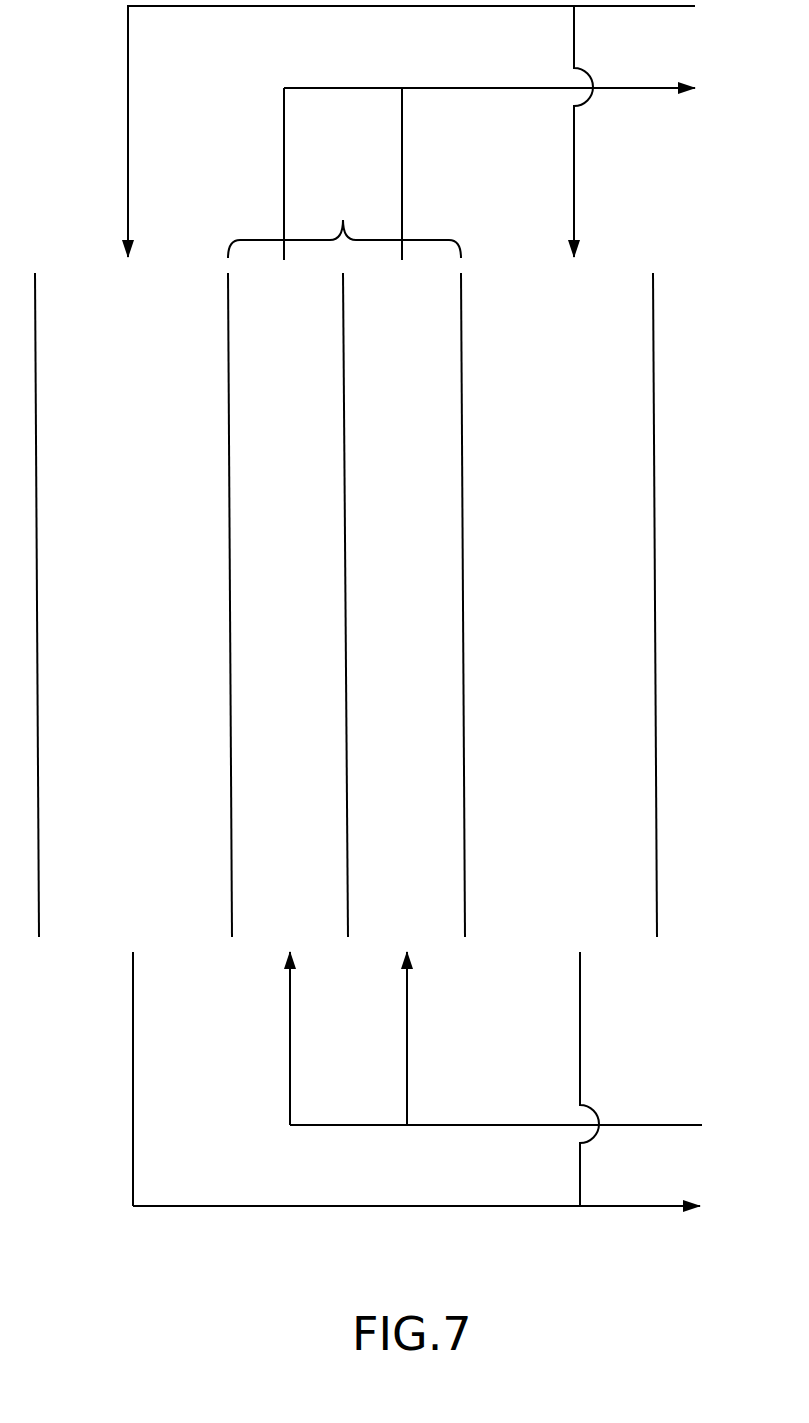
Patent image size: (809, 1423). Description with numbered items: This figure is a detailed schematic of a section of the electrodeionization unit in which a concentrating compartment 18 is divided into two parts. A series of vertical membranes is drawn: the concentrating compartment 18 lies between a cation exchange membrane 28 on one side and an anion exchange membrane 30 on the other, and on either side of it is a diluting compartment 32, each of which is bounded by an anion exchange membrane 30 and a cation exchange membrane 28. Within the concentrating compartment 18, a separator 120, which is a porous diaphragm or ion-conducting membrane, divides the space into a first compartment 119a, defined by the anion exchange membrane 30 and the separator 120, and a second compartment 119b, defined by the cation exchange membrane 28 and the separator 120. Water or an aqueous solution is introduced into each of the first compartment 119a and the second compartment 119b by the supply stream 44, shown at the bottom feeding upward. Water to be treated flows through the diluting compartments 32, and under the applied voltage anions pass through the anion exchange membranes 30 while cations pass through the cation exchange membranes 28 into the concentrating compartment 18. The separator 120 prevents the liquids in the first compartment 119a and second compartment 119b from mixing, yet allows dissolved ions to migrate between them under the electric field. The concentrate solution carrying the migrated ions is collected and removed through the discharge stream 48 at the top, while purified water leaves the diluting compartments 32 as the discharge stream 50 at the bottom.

The concentrating compartment 18 is at (360, 216).
The cation exchange membrane 28 is at (37, 495).
The anion exchange membrane 30 is at (229, 595).
The diluting compartment 32 is at (147, 699).
The supply stream 44 is at (640, 1125).
The discharge stream 48 is at (643, 88).
The discharge stream 50 is at (637, 1206).
The first compartment 119a is at (328, 699).
The second compartment 119b is at (440, 699).
The separator 120 is at (348, 870).